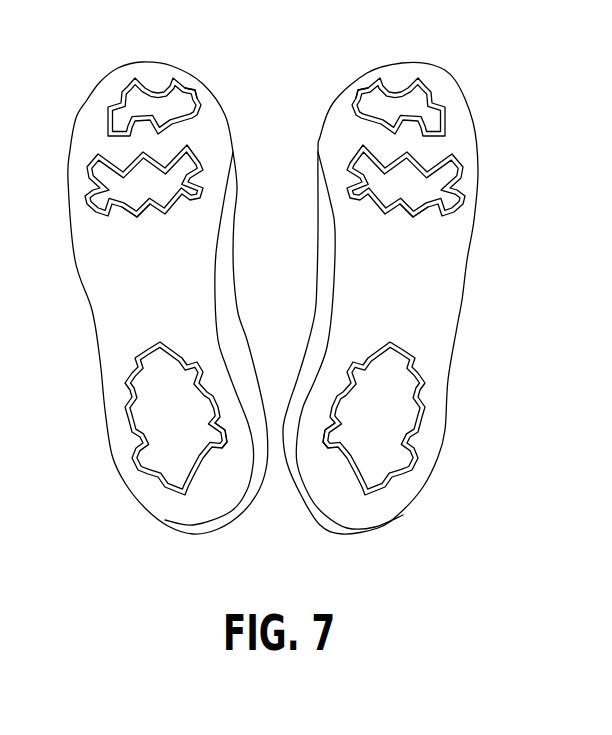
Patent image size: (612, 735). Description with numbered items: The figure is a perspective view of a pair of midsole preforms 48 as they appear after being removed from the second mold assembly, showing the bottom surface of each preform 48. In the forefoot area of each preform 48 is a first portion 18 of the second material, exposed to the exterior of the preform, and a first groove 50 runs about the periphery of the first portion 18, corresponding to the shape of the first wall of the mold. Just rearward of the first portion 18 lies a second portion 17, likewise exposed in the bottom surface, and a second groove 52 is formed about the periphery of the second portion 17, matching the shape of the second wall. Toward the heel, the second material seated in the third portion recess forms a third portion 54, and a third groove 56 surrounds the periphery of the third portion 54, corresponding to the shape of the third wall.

The second portion 17 is at (139, 194).
The first portion 18 is at (157, 102).
The midsole preform 48 is at (170, 315).
The first groove 50 is at (176, 90).
The second groove 52 is at (138, 215).
The third portion 54 is at (166, 425).
The third groove 56 is at (323, 452).